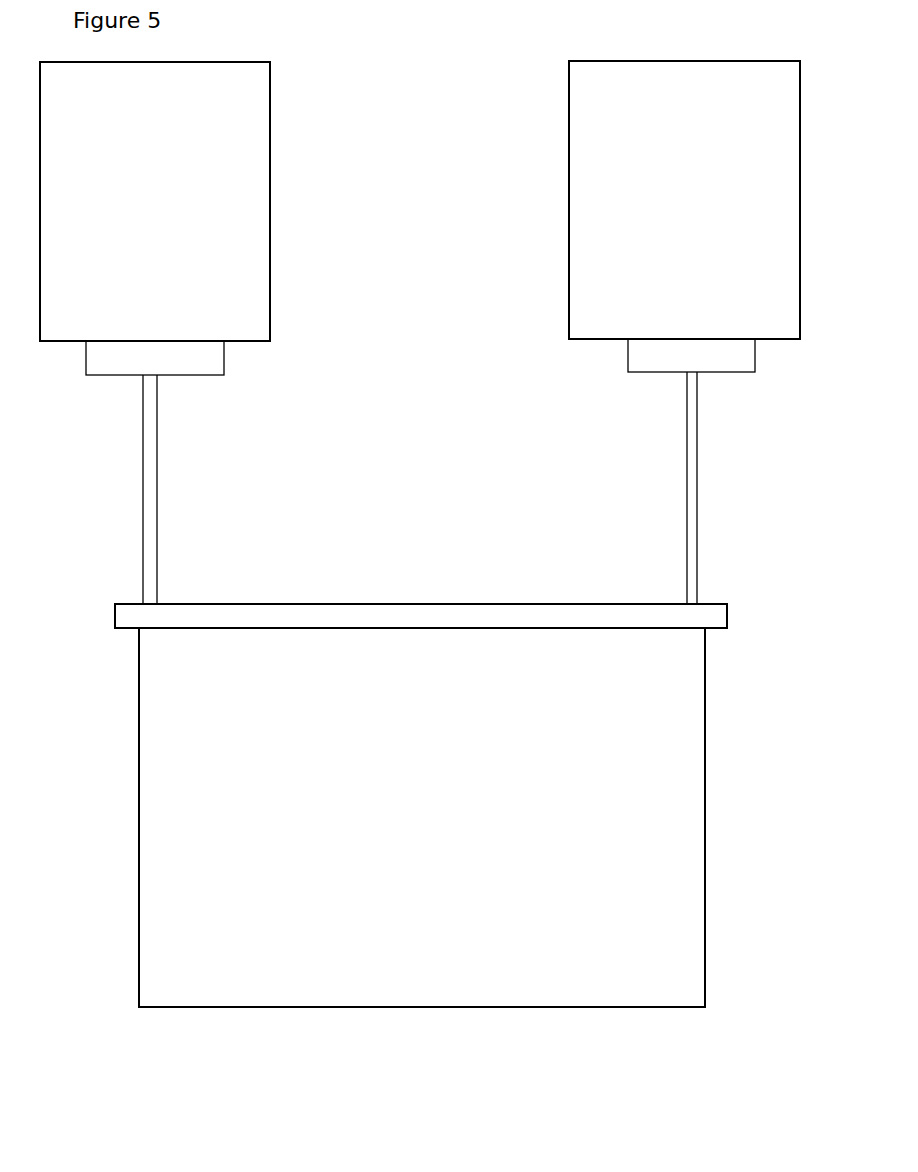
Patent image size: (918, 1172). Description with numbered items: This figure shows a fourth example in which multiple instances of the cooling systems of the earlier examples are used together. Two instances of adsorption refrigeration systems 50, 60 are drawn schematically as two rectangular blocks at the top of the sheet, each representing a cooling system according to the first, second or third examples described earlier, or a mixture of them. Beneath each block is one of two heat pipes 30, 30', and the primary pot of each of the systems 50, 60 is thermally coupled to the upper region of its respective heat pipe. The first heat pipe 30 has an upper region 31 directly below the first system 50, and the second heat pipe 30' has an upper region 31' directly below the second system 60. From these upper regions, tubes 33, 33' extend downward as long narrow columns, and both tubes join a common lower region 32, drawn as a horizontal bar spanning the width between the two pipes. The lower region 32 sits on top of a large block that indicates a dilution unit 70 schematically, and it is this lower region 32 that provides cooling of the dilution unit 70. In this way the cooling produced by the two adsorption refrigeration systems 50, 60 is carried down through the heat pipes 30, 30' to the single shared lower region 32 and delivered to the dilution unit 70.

The adsorption refrigeration system 50 is at (258, 116).
The adsorption refrigeration system 60 is at (570, 96).
The heat pipe 30 is at (131, 490).
The heat pipe 30' is at (695, 487).
The upper region 31 is at (191, 388).
The upper region 31' is at (653, 381).
The lower region 32 is at (360, 593).
The tube 33 is at (188, 490).
The tube 33' is at (648, 487).
The dilution unit 70 is at (719, 727).